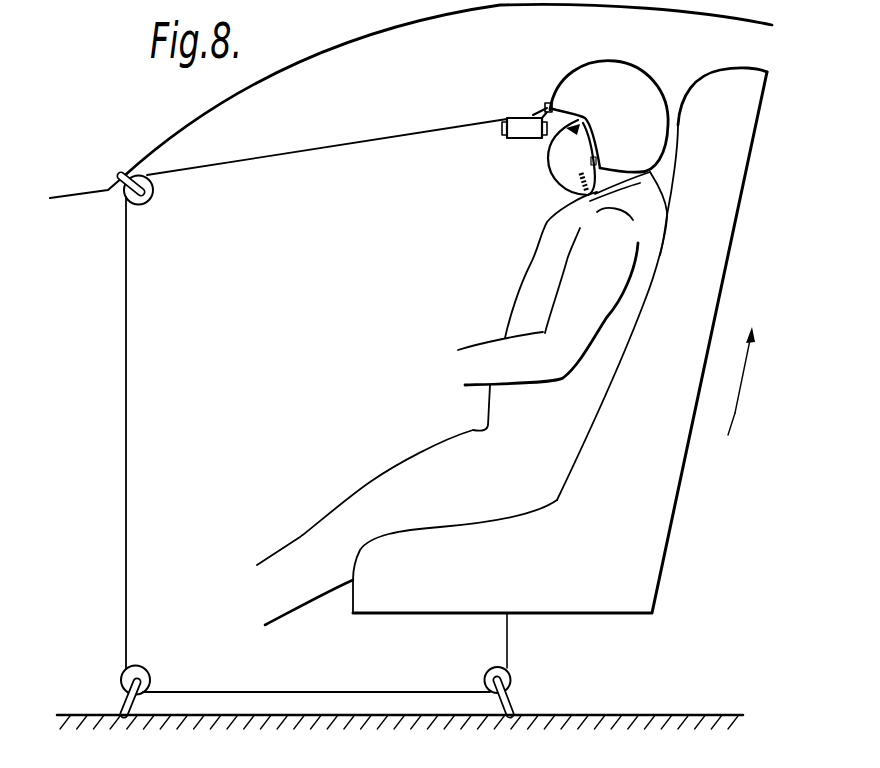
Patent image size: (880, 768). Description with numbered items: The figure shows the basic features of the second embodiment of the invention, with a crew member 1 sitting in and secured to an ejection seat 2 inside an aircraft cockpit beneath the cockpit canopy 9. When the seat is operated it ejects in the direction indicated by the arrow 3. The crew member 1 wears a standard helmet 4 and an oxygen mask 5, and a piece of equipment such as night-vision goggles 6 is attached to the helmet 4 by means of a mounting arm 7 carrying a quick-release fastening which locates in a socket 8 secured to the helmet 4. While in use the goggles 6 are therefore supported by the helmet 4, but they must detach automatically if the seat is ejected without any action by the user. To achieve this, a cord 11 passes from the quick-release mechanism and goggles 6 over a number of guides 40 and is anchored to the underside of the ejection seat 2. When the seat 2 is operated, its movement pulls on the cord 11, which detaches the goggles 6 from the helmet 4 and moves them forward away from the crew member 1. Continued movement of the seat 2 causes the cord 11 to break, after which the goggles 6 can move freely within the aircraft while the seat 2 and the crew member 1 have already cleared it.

The crew member 1 is at (542, 260).
The ejection seat 2 is at (722, 85).
The arrow 3 is at (735, 413).
The helmet 4 is at (637, 85).
The oxygen mask 5 is at (563, 158).
The night-vision goggles 6 is at (518, 130).
The mounting arm 7 is at (533, 115).
The mounting socket 8 is at (547, 103).
The cockpit canopy 9 is at (157, 143).
The cord 11 is at (280, 157).
The guides 40 is at (143, 198).